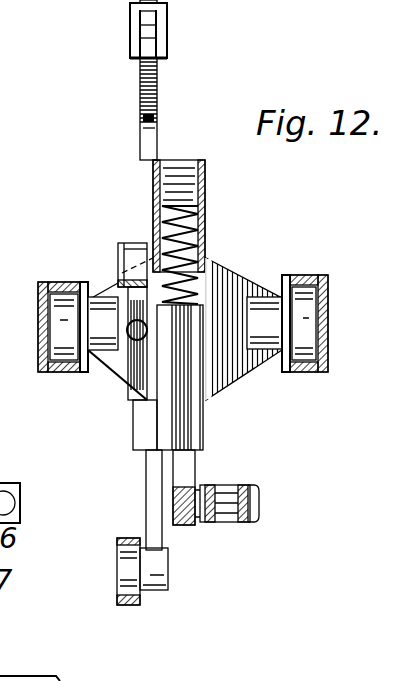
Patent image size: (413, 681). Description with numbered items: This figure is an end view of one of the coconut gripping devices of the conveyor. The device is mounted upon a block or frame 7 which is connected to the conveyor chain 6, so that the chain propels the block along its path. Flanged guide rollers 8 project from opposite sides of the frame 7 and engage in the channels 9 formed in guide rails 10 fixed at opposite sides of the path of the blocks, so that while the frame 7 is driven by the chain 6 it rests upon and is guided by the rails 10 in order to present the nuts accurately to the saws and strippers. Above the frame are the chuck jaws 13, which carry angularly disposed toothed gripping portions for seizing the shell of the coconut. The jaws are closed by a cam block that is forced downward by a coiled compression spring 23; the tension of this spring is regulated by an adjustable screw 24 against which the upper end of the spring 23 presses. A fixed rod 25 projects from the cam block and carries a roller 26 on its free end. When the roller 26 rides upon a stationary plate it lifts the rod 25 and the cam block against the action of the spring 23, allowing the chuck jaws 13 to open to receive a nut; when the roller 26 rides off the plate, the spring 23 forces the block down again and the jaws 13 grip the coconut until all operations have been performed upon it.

The chuck jaws 13 is at (159, 88).
The adjustable screw 24 is at (183, 177).
The coiled compression spring 23 is at (198, 283).
The block or frame 7 is at (251, 284).
The channels 9 is at (52, 292).
The flanged guide rollers 8 is at (65, 329).
The guide rails 10 is at (61, 370).
The conveyor chain 6 is at (232, 486).
The fixed rod 25 is at (151, 497).
The roller 26 is at (133, 598).